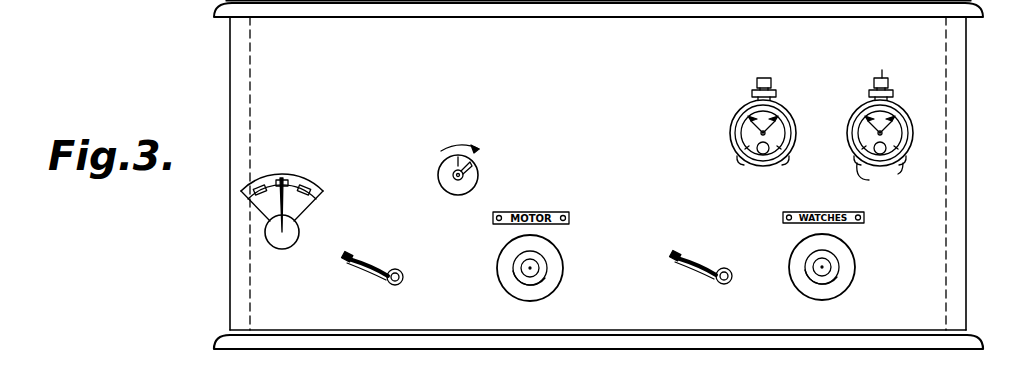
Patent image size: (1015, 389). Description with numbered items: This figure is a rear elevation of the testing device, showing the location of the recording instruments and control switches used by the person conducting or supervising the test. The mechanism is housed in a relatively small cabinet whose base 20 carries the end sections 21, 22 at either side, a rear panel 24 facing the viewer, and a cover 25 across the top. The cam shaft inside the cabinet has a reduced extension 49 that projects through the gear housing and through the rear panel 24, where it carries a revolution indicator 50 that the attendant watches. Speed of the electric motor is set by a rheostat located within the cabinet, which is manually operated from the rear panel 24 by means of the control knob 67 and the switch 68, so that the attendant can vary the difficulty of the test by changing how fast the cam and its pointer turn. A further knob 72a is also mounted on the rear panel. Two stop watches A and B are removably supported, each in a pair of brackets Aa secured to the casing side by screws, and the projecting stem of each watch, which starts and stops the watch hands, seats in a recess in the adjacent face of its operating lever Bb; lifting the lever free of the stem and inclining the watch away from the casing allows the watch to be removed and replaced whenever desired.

The base 20 is at (598, 353).
The end section 21 is at (967, 109).
The end section 22 is at (229, 84).
The rear panel 24 is at (616, 121).
The cover 25 is at (603, 16).
The reduced extension 49 is at (465, 186).
The revolution indicator 50 is at (472, 164).
The control knob 67 is at (286, 237).
The switch 68 is at (556, 263).
The watches control knob 72a is at (853, 267).
The stop watch A is at (765, 122).
The stop watch B is at (894, 113).
The brackets Aa is at (786, 163).
The operating lever Bb is at (765, 78).